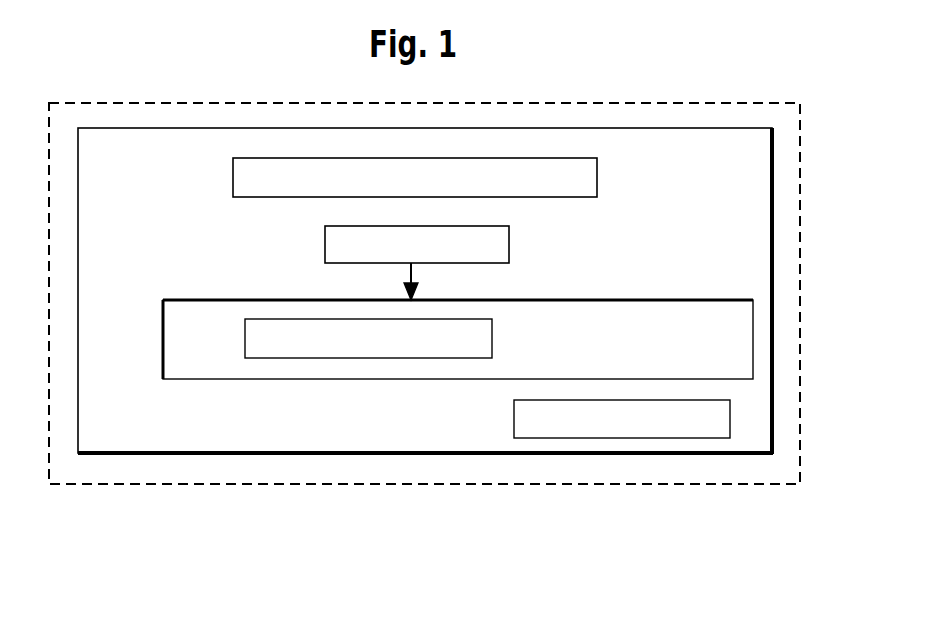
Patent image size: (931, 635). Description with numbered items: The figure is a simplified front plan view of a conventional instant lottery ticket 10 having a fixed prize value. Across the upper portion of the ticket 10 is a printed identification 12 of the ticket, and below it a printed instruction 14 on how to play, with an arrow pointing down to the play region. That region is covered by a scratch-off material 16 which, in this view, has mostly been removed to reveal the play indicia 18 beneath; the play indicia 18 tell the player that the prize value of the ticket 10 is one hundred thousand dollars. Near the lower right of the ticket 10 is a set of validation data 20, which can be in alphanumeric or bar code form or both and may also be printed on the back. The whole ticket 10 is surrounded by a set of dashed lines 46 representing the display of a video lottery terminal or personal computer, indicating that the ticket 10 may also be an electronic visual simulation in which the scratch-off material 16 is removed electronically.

The instant lottery ticket 10 is at (742, 128).
The printed identification 12 is at (523, 163).
The printed instruction 14 is at (510, 237).
The scratch-off material 16 is at (342, 369).
The play indicia 18 is at (245, 342).
The validation data 20 is at (583, 432).
The dashed lines 46 is at (180, 102).